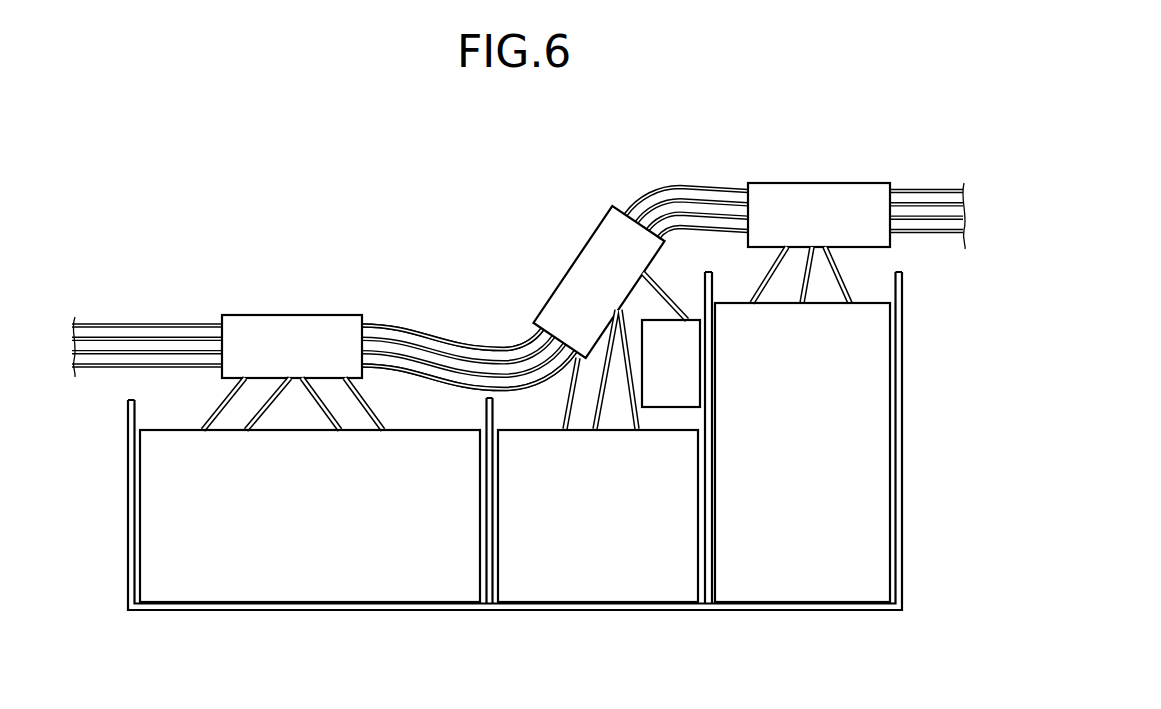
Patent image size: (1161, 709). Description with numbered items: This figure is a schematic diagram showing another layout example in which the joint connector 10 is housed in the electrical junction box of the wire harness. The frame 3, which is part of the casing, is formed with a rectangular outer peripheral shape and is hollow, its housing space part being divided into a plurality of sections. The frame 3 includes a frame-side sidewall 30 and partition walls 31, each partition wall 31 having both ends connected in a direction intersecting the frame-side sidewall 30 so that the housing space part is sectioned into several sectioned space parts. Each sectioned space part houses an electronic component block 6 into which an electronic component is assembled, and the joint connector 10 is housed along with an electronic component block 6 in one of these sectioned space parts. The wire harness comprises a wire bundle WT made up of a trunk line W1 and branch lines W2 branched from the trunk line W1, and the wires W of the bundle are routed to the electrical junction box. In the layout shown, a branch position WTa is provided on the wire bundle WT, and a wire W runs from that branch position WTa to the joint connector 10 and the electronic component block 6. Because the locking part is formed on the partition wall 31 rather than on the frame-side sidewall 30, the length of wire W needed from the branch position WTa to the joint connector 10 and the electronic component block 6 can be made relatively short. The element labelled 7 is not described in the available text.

The frame 3 is at (514, 401).
The electronic component block 6 is at (302, 560).
The tank 7 is at (803, 560).
The joint connector 10 is at (675, 362).
The frame-side sidewall 30 is at (128, 410).
The partition wall 31 is at (486, 407).
The wire W is at (567, 395).
The trunk line W1 is at (141, 323).
The branch line W2 is at (469, 511).
The wire bundle WT is at (658, 185).
The branch position WTa is at (294, 315).